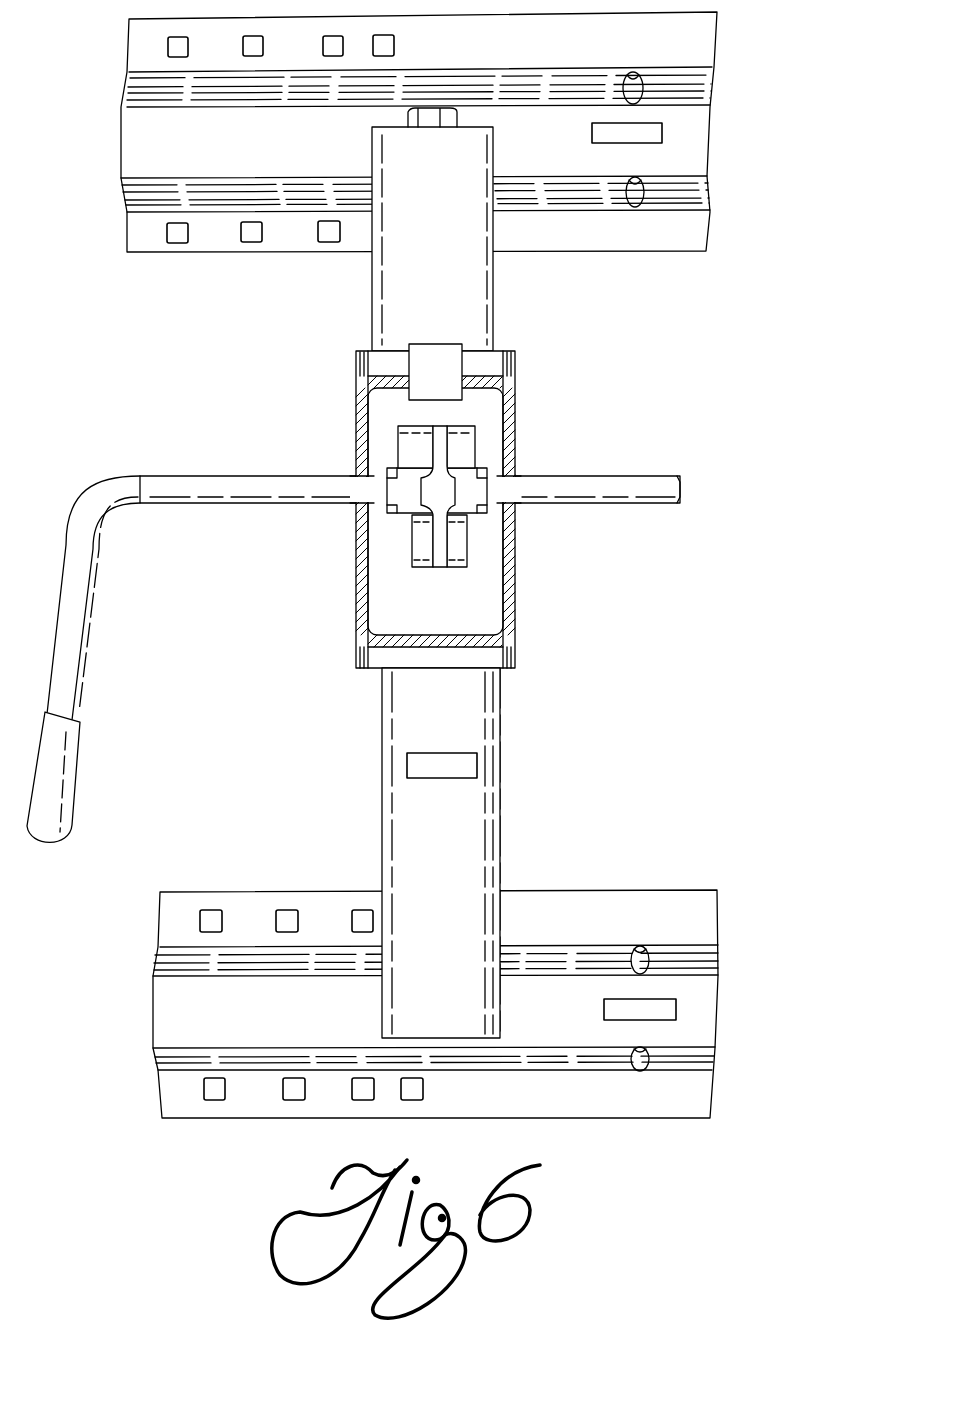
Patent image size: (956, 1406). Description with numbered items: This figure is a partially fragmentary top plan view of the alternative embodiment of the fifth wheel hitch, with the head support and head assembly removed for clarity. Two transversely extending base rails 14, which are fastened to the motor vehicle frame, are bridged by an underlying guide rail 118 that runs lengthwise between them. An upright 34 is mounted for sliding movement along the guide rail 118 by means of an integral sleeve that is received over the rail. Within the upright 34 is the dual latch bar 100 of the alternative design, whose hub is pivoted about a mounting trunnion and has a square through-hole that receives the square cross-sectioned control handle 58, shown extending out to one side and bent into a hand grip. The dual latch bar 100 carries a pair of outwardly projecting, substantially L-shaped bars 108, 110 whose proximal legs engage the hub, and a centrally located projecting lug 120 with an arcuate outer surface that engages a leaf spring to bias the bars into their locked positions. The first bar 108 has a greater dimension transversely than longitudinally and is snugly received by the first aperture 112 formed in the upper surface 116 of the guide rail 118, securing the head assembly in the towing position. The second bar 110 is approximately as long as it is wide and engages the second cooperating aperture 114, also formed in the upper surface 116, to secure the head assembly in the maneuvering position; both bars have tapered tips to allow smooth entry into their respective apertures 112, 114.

The base rails 14 is at (688, 148).
The upright 34 is at (512, 403).
The control handle 58 is at (630, 505).
The dual latch bar 100 is at (458, 468).
The first bar 108 is at (407, 425).
The bar 110 is at (428, 567).
The first aperture 112 is at (452, 770).
The second aperture 114 is at (443, 343).
The upper surface 116 is at (418, 823).
The guide rail 118 is at (502, 848).
The projecting lug 120 is at (433, 497).